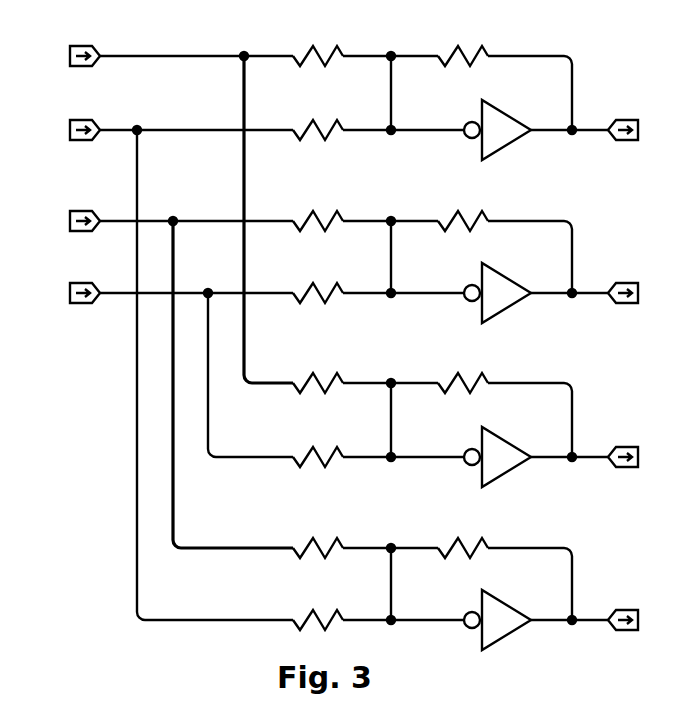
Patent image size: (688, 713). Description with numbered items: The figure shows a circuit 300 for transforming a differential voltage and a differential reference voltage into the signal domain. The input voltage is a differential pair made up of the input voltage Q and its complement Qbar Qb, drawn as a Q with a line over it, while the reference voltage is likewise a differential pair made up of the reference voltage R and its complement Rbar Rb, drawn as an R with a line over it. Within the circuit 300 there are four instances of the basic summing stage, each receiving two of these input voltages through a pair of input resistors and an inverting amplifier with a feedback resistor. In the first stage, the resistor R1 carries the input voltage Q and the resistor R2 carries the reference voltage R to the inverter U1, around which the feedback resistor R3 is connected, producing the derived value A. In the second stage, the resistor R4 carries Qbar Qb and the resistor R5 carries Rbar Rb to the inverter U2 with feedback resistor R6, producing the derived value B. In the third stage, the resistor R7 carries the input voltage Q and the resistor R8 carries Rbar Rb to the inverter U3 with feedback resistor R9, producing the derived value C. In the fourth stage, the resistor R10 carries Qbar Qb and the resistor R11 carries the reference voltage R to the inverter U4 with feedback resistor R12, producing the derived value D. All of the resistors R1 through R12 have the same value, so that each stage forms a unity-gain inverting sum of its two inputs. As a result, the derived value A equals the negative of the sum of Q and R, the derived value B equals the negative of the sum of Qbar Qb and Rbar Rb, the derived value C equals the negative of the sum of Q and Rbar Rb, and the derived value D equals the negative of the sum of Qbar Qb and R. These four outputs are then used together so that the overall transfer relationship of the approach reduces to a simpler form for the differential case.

The circuit 300 is at (92, 466).
The resistor R1 is at (338, 47).
The resistor R2 is at (373, 121).
The resistor R3 is at (481, 79).
The resistor R4 is at (338, 212).
The resistor R5 is at (373, 284).
The resistor R6 is at (481, 243).
The resistor R7 is at (338, 374).
The resistor R8 is at (373, 448).
The resistor R9 is at (481, 406).
The resistor R10 is at (336, 539).
The resistor R11 is at (371, 611).
The resistor R12 is at (481, 570).
The inverter U1 is at (536, 126).
The inverter U2 is at (536, 290).
The inverter U3 is at (536, 454).
The inverter U4 is at (536, 617).
The input voltage Q is at (165, 214).
The reference voltage R is at (165, 370).
The Qbar input voltage Qb is at (49, 211).
The Rbar reference voltage Rb is at (49, 283).
The derived value A is at (636, 130).
The derived value B is at (636, 293).
The derived value C is at (636, 457).
The derived value D is at (637, 620).